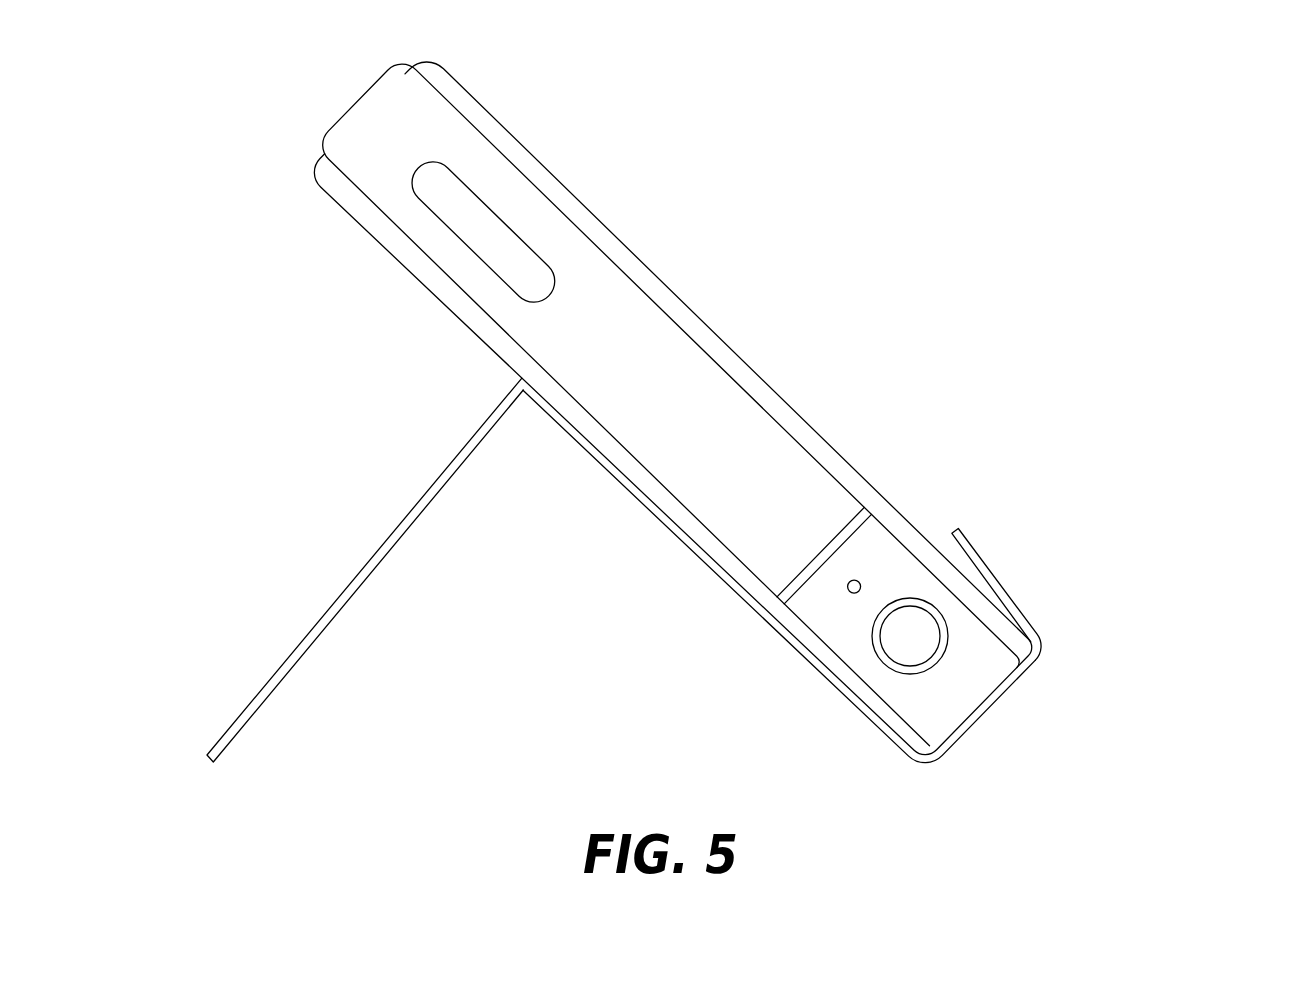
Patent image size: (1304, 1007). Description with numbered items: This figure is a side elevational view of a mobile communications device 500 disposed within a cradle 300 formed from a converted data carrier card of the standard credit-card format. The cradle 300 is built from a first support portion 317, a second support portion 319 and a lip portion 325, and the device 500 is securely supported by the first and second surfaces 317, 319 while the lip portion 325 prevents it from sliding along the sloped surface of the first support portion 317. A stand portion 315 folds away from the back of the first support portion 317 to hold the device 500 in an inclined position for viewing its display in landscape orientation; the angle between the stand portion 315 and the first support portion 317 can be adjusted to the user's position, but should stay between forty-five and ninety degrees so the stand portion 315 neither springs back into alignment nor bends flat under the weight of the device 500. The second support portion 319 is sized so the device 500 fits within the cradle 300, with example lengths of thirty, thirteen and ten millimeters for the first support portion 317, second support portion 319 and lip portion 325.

The cradle 300 is at (741, 427).
The stand portion 315 is at (270, 675).
The first support portion 317 is at (668, 524).
The second support portion 319 is at (993, 698).
The lip portion 325 is at (978, 558).
The mobile communications device 500 is at (347, 117).